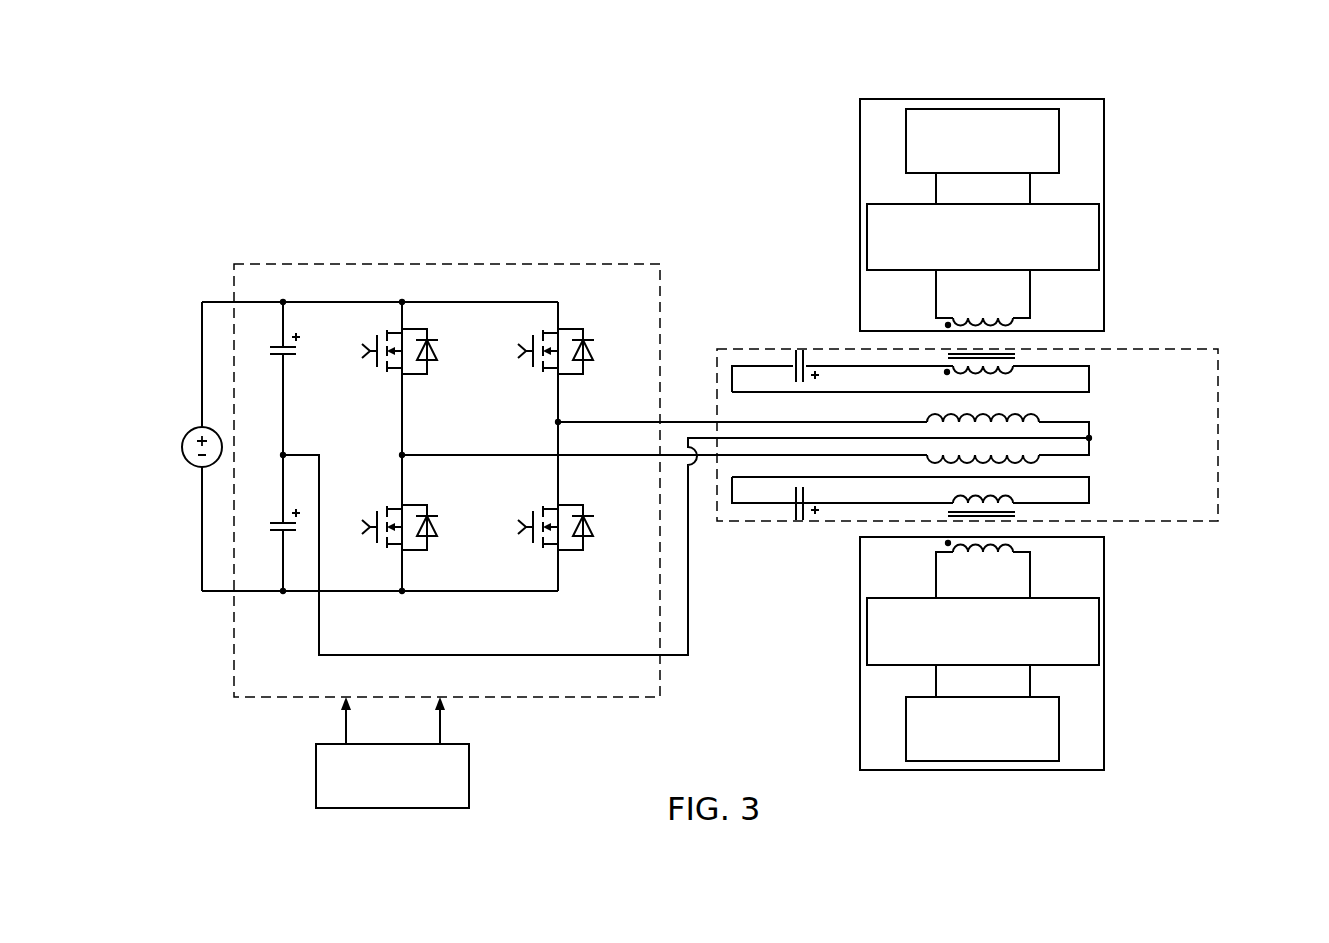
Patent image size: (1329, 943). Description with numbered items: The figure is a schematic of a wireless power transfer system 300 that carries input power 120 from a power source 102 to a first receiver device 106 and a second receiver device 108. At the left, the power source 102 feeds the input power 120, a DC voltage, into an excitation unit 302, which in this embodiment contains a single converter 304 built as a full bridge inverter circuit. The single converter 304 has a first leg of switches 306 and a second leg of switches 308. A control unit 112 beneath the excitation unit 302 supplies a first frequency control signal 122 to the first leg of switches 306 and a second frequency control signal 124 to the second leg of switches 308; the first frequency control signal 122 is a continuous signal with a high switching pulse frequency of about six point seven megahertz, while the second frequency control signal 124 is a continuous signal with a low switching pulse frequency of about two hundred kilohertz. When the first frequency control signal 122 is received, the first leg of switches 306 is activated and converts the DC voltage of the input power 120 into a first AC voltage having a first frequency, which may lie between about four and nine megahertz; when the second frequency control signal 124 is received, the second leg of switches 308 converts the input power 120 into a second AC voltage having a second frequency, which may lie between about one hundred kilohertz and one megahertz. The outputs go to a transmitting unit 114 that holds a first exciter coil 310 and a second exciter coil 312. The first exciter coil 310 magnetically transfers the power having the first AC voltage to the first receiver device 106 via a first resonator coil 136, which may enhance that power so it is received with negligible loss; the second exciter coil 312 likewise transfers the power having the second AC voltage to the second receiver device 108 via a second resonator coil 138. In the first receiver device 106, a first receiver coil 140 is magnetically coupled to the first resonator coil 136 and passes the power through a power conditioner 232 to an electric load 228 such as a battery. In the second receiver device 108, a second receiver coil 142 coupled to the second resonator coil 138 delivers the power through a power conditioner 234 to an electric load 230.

The wireless power transfer system 300 is at (1214, 94).
The excitation unit 302 is at (432, 263).
The single converter 304 is at (495, 412).
The first leg of switches 306 is at (373, 519).
The second leg of switches 308 is at (529, 519).
The first exciter coil 310 is at (1020, 417).
The second exciter coil 312 is at (1016, 461).
The power source 102 is at (190, 433).
The input power 120 is at (202, 338).
The control unit 112 is at (469, 775).
The first frequency control signal 122 is at (345, 730).
The second frequency control signal 124 is at (441, 726).
The transmitting unit 114 is at (1219, 432).
The first resonator coil 136 is at (992, 371).
The second resonator coil 138 is at (990, 500).
The first receiver device 106 is at (1012, 188).
The second receiver device 108 is at (1013, 679).
The electric load 228 is at (1060, 140).
The electric load 230 is at (1060, 728).
The power conditioner 232 is at (1100, 236).
The power conditioner 234 is at (1100, 630).
The first receiver coil 140 is at (990, 322).
The second receiver coil 142 is at (995, 548).